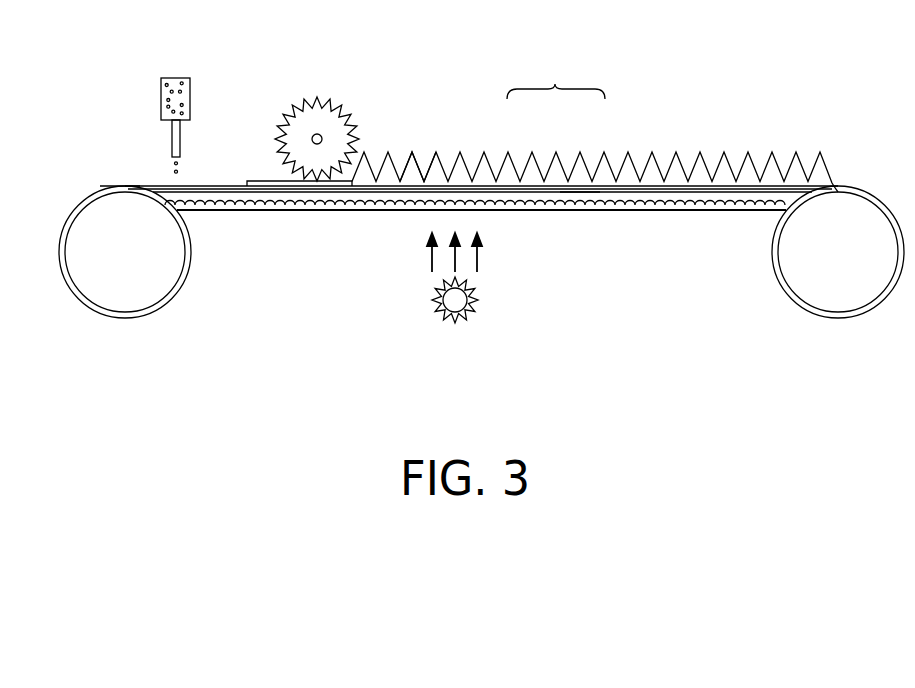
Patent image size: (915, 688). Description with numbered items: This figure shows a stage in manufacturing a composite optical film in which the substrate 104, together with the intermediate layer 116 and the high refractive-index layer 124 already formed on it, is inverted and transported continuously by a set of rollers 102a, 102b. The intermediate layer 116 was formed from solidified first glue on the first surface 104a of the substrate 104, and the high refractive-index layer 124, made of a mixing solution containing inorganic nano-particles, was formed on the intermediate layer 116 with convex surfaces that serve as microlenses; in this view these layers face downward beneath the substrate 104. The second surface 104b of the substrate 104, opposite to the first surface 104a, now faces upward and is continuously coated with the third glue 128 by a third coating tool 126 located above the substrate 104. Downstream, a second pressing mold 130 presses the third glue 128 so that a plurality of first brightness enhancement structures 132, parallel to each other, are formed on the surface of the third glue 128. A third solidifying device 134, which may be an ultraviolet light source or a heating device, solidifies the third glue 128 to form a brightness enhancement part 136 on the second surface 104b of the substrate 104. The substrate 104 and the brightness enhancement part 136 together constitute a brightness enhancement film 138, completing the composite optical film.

The roller 102a is at (114, 297).
The roller 102b is at (828, 295).
The substrate 104 is at (557, 190).
The first surface 104a is at (583, 193).
The second surface 104b is at (106, 188).
The intermediate layer 116 is at (518, 210).
The high refractive-index layer 124 is at (333, 211).
The third coating tool 126 is at (177, 77).
The third glue 128 is at (252, 181).
The second pressing mold 130 is at (325, 113).
The first brightness enhancement structures 132 is at (422, 149).
The third solidifying device 134 is at (462, 307).
The brightness enhancement part 136 is at (512, 168).
The brightness enhancement film 138 is at (555, 84).